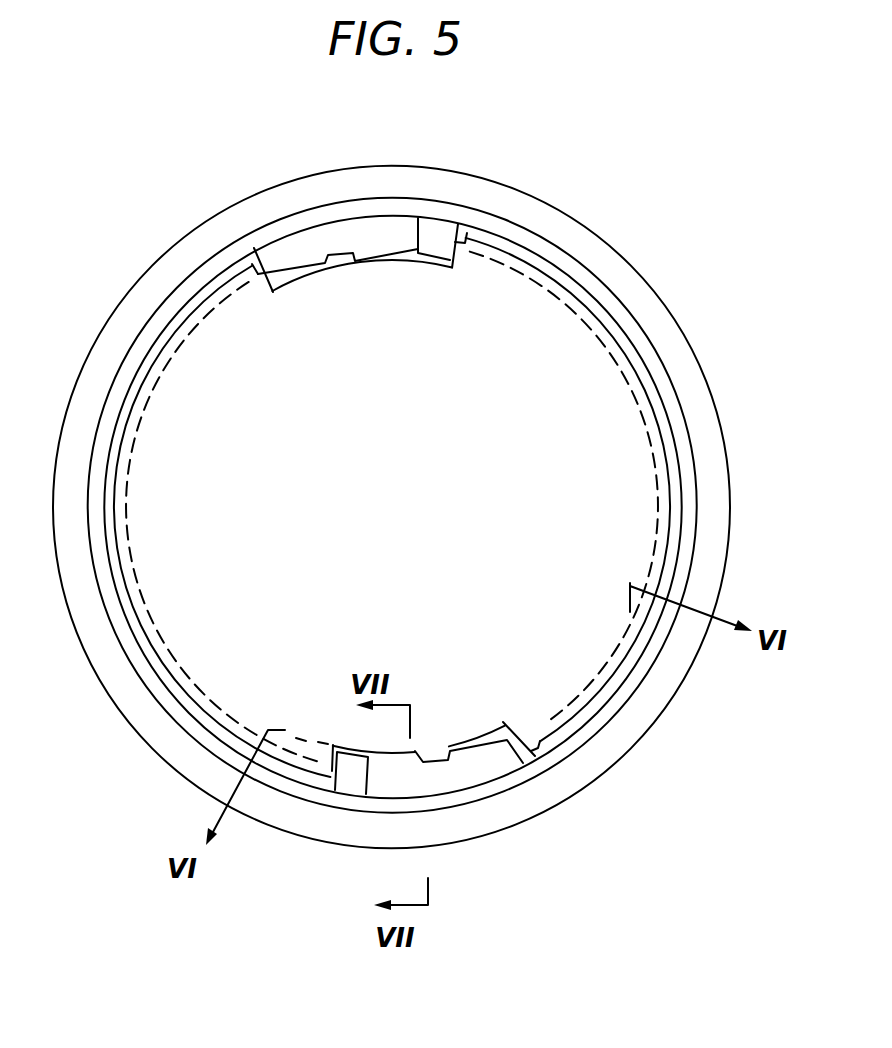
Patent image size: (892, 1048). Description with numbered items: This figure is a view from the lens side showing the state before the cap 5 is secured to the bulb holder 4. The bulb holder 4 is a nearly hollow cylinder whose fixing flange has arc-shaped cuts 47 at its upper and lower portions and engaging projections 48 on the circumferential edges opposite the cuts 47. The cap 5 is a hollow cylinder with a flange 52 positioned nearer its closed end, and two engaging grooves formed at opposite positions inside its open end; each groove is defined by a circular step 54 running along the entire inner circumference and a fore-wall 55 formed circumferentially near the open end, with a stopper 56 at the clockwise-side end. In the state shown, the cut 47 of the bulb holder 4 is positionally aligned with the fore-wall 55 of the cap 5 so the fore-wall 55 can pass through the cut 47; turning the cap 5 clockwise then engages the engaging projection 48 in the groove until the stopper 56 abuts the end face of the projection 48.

The bulb holder 4 is at (152, 330).
The cap 5 is at (186, 219).
The arc-shaped cut 47 is at (468, 232).
The engaging projection 48 is at (246, 262).
The flange 52 is at (688, 328).
The circular step 54 is at (549, 290).
The fore-wall 55 is at (294, 243).
The stopper 56 is at (436, 242).